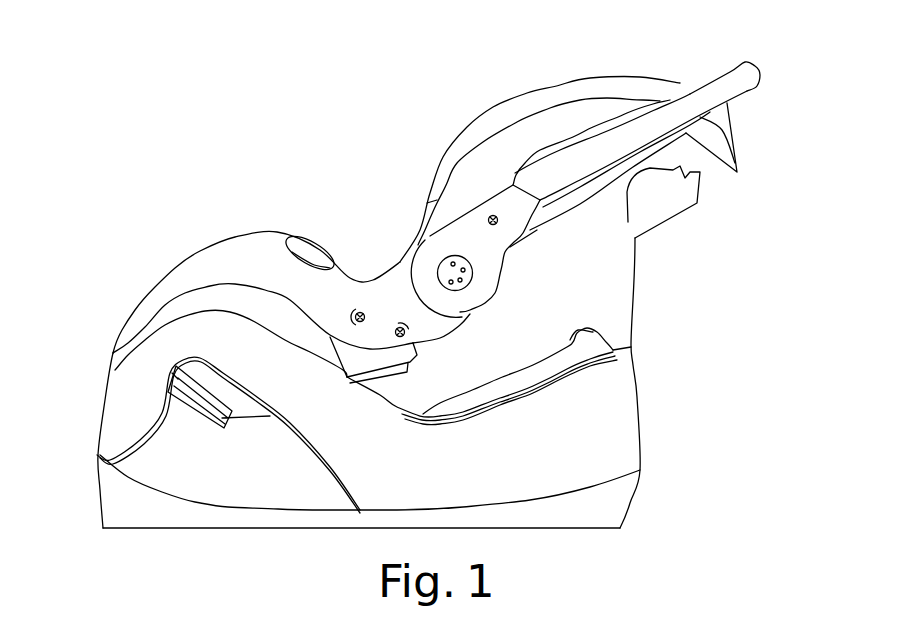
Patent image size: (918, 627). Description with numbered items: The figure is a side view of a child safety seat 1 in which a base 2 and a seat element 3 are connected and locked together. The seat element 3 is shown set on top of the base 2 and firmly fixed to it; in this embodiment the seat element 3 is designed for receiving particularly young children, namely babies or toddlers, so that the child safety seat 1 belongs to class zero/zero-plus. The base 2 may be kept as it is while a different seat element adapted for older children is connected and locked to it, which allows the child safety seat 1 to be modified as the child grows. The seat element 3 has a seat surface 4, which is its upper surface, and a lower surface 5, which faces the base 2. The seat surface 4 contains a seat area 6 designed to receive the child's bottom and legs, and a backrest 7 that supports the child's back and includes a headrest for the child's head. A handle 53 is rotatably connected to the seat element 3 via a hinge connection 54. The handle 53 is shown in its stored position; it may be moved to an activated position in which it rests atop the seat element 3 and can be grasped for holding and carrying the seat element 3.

The child safety seat 1 is at (112, 180).
The base 2 is at (649, 425).
The seat element 3 is at (468, 123).
The seat surface 4 is at (370, 278).
The lower surface 5 is at (453, 407).
The seat area 6 is at (208, 243).
The backrest 7 is at (570, 78).
The handle 53 is at (736, 84).
The hinge connection 54 is at (467, 272).